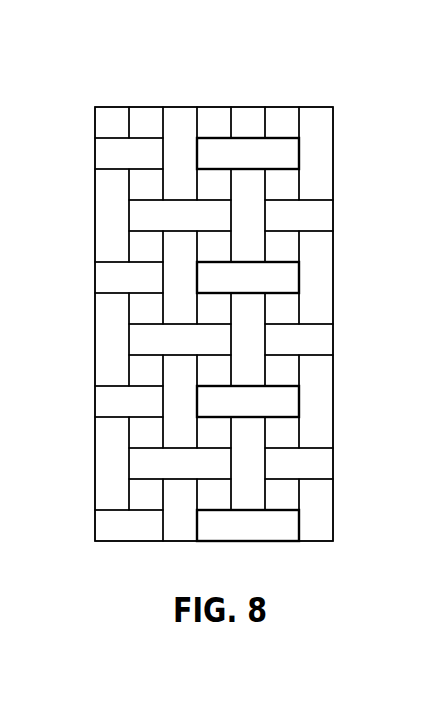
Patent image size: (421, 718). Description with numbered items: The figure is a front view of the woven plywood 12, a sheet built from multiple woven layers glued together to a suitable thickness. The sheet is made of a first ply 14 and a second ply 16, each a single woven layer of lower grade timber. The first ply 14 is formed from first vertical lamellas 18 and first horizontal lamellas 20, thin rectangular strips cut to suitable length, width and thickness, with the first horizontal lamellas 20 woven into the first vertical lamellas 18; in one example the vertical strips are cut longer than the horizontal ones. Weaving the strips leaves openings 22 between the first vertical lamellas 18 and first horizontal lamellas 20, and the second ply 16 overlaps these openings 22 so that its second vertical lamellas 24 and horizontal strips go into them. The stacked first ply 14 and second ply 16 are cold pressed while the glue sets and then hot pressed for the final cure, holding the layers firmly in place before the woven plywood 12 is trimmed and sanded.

The woven plywood 12 is at (79, 60).
The first ply 14 is at (322, 158).
The second ply 16 is at (220, 142).
The first vertical lamellas 18 is at (313, 117).
The first horizontal lamellas 20 is at (285, 120).
The openings 22 is at (143, 178).
The second vertical lamellas 24 is at (252, 148).